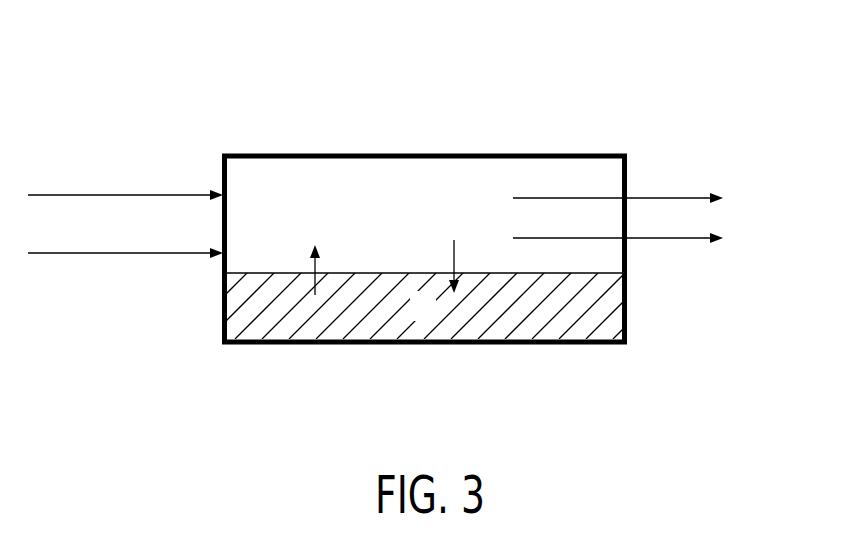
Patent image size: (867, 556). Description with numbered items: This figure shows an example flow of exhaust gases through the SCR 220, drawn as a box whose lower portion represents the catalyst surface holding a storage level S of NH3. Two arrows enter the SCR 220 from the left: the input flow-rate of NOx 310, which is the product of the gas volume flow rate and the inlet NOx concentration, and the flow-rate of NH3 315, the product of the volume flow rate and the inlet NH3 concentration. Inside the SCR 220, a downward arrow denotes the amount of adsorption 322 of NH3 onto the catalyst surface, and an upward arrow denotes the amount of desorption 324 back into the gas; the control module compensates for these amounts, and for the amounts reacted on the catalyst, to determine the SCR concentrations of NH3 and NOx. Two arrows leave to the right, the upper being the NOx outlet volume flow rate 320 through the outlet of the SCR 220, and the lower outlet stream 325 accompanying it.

The SCR 220 is at (735, 60).
The input flow-rate of NOx 310 is at (135, 193).
The flow-rate of NH3 315 is at (135, 255).
The NOx outlet volume flow rate 320 is at (670, 197).
The second outlet stream 325 is at (670, 240).
The amount of adsorption 322 is at (452, 258).
The amount of desorption 324 is at (312, 270).